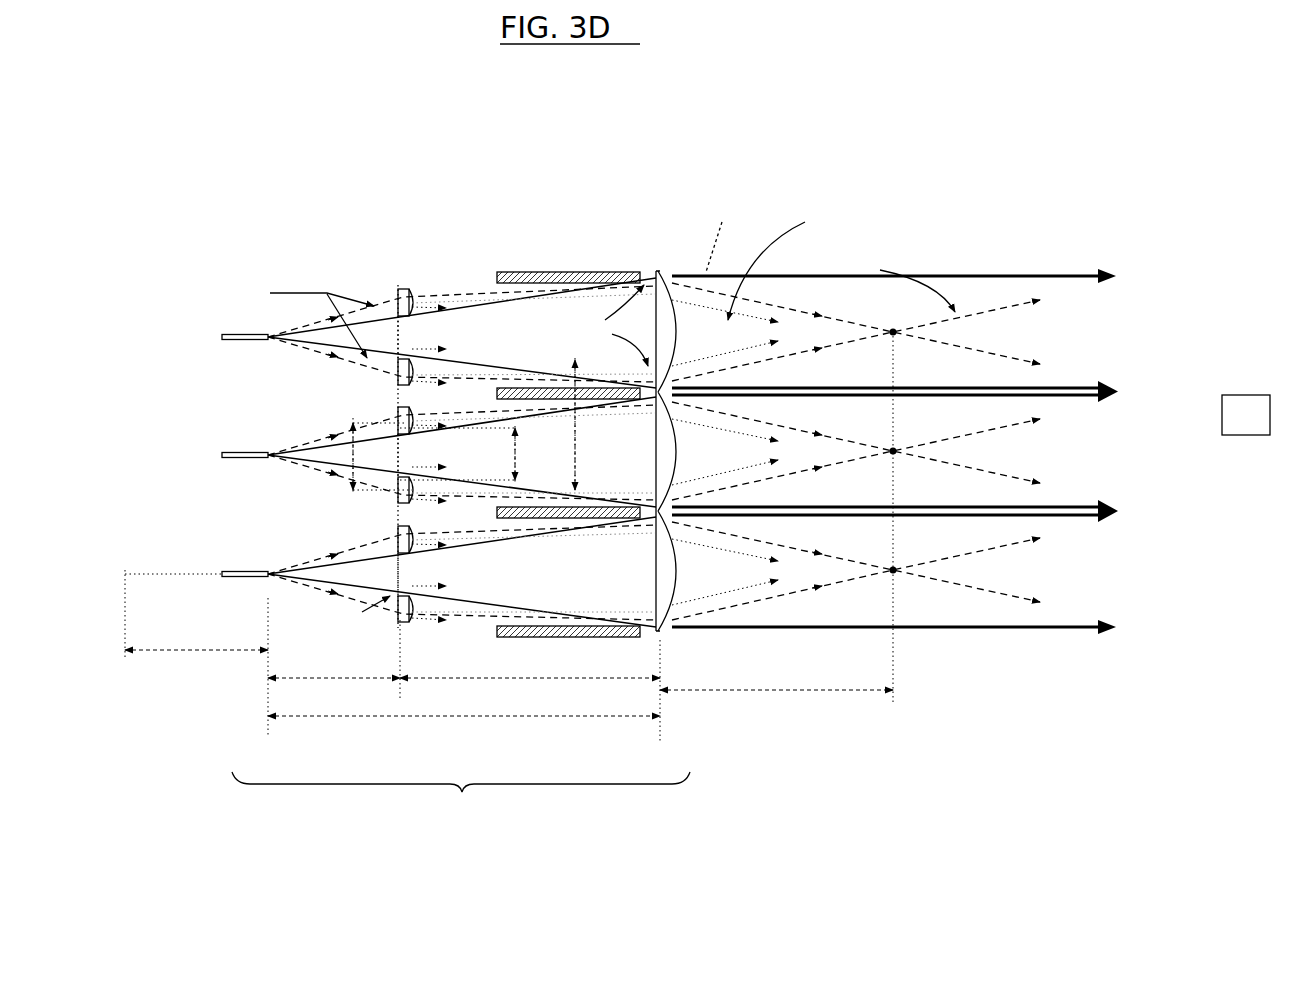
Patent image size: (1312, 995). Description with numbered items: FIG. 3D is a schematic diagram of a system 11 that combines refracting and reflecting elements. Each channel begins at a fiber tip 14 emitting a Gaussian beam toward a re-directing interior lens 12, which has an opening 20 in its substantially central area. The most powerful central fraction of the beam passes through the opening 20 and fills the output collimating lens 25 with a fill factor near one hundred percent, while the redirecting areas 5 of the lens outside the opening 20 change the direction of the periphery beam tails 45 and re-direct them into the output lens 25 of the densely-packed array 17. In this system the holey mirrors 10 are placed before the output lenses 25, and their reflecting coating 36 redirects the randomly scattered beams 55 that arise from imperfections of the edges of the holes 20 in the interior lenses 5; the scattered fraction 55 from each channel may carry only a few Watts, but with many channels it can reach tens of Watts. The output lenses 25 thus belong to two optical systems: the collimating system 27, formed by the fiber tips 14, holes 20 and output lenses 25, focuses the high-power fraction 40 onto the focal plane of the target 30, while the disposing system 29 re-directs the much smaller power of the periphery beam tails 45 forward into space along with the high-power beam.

The system 11 is at (186, 135).
The fiber tip 14 is at (266, 333).
The disposing system 29 is at (430, 157).
The interior lens 12 is at (400, 415).
The redirecting area 5 is at (401, 291).
The opening 20 is at (410, 456).
The scattered beams 55 is at (445, 302).
The reflecting coating 36 is at (520, 272).
The holey mirror 10 is at (568, 454).
The collimating system 27 is at (635, 380).
The output collimating lens 25 is at (684, 440).
The high-power fraction 40 is at (1148, 275).
The periphery beam tails 45 is at (985, 329).
The target 30 is at (1257, 425).
The densely-packed array 17 is at (461, 798).